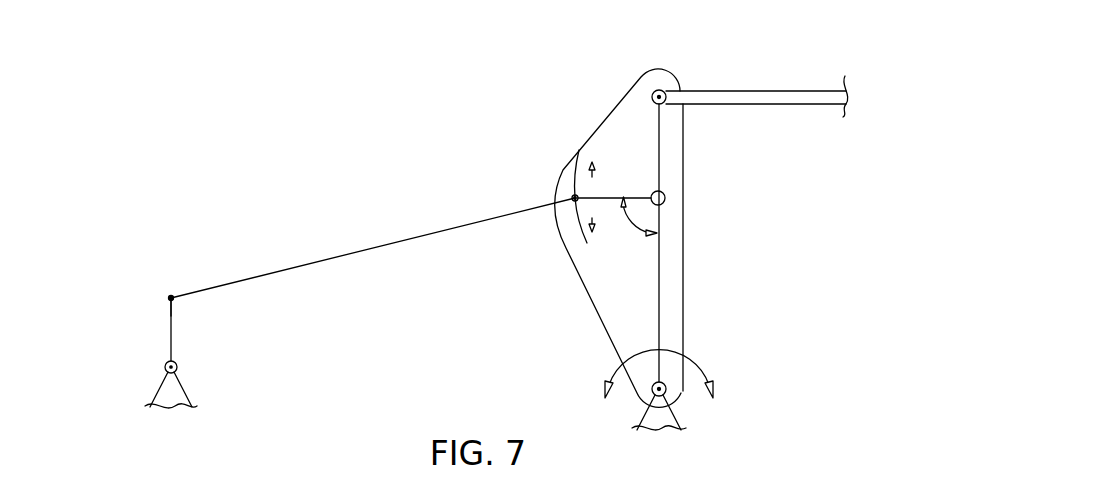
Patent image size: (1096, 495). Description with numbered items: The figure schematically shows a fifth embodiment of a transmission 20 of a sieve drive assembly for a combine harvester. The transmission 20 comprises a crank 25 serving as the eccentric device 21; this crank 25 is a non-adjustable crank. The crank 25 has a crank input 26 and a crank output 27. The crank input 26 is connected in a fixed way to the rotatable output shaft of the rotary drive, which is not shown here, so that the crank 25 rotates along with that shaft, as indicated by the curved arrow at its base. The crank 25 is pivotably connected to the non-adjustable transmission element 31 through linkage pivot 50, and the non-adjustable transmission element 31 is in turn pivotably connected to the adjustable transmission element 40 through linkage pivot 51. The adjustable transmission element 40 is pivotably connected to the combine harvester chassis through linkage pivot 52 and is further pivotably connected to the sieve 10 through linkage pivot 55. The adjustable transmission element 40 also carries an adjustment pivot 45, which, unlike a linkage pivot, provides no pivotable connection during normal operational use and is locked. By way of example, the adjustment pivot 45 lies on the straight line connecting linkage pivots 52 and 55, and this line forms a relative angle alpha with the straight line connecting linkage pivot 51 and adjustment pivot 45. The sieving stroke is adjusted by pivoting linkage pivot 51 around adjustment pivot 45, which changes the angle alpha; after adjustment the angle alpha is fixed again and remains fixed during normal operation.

The sieve 10 is at (804, 95).
The transmission 20 is at (277, 69).
The eccentric device 21 is at (130, 387).
The crank 25 is at (170, 327).
The crank input 26 is at (165, 366).
The crank output 27 is at (172, 308).
The non-adjustable transmission element 31 is at (313, 266).
The adjustable transmission element 40 is at (624, 108).
The adjustment pivot 45 is at (665, 199).
The linkage pivot 50 is at (170, 297).
The linkage pivot 51 is at (573, 193).
The linkage pivot 52 is at (667, 389).
The linkage pivot 55 is at (664, 91).